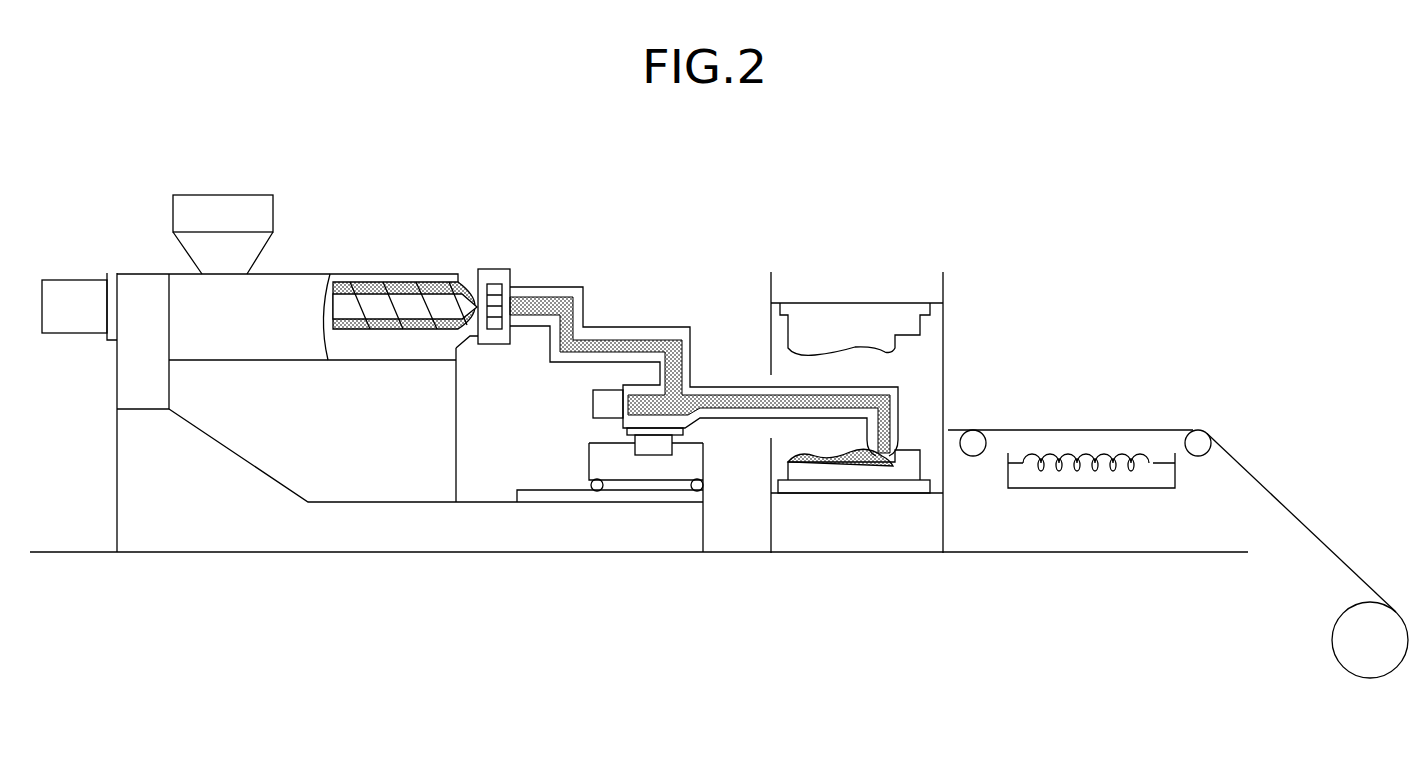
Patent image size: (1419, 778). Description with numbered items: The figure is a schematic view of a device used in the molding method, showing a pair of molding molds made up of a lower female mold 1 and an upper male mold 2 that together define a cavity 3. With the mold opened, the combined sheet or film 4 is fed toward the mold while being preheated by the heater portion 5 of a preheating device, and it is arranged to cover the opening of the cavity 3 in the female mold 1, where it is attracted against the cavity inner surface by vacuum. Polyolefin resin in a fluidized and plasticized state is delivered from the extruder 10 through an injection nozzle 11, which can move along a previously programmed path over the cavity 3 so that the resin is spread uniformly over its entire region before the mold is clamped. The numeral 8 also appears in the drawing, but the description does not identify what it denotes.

The lower female mold 1 is at (907, 468).
The upper male mold 2 is at (798, 335).
The cavity 3 is at (893, 455).
The combined sheet or film 4 is at (1273, 493).
The heater portion 5 is at (1097, 463).
The press frame 8 is at (725, 490).
The extruder 10 is at (402, 273).
The injection nozzle 11 is at (885, 443).